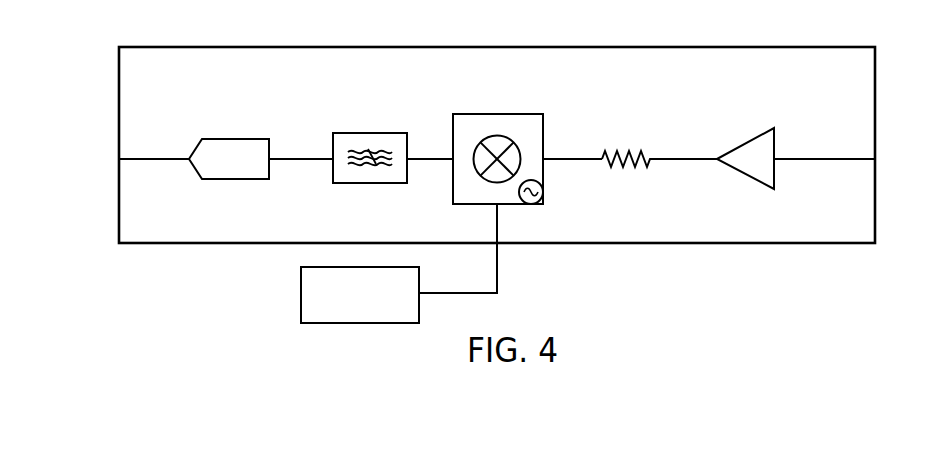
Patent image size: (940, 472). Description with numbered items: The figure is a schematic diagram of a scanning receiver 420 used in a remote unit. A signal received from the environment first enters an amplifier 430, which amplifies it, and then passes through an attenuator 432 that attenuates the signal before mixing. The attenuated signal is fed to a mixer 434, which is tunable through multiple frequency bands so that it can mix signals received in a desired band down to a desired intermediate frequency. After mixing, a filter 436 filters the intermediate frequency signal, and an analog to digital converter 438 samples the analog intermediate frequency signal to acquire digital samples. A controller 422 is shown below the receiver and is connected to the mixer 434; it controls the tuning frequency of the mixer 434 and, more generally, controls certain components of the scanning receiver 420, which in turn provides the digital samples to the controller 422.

The scanning receiver 420 is at (647, 83).
The controller 422 is at (301, 296).
The amplifier 430 is at (745, 143).
The attenuator 432 is at (627, 134).
The mixer 434 is at (543, 127).
The filter 436 is at (370, 133).
The analog to digital converter 438 is at (236, 139).